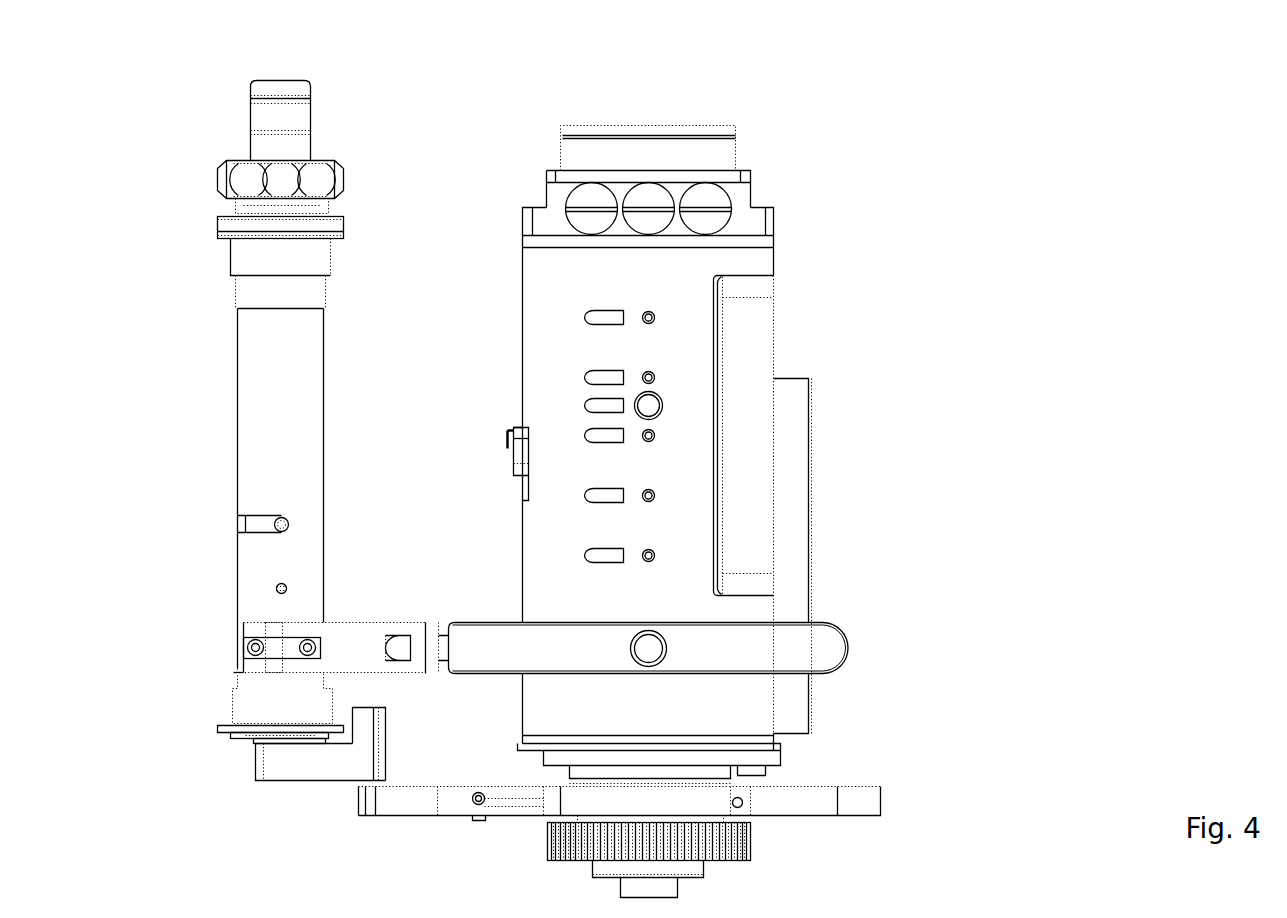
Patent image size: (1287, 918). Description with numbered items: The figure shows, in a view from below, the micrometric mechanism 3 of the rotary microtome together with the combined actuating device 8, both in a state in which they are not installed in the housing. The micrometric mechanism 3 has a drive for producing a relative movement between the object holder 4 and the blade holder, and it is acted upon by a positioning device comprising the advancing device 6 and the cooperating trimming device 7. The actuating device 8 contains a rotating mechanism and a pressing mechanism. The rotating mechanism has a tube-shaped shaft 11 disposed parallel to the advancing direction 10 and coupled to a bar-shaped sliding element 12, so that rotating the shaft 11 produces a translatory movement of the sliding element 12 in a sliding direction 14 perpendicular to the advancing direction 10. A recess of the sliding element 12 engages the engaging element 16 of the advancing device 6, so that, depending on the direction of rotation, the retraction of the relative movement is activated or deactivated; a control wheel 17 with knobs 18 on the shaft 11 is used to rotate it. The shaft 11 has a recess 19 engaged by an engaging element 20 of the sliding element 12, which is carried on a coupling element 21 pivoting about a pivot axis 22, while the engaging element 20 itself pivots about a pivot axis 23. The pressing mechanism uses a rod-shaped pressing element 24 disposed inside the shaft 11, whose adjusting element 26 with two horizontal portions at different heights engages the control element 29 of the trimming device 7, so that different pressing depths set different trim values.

The micrometric mechanism 3 is at (775, 307).
The object holder 4 is at (735, 150).
The advancing device 6 is at (775, 360).
The trimming device 7 is at (302, 780).
The actuating device 8 is at (200, 226).
The advancing direction 10 is at (488, 295).
The shaft 11 is at (237, 404).
The sliding element 12 is at (470, 620).
The sliding direction 14 is at (495, 688).
The engaging element 16 is at (665, 648).
The control wheel 17 is at (320, 160).
The knobs 18 is at (342, 166).
The recess 19 is at (228, 628).
The engaging element 20 is at (247, 655).
The coupling element 21 is at (352, 622).
The pivot axis 22 is at (432, 618).
The pivot axis 23 is at (272, 673).
The pressing element 24 is at (250, 146).
The adjusting element 26 is at (338, 780).
The control element 29 is at (409, 815).